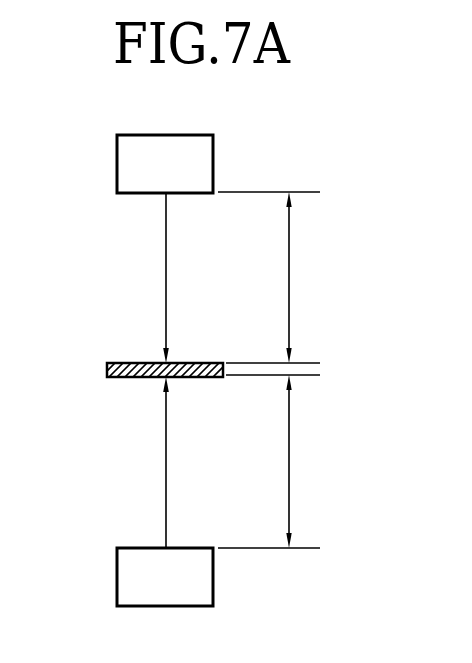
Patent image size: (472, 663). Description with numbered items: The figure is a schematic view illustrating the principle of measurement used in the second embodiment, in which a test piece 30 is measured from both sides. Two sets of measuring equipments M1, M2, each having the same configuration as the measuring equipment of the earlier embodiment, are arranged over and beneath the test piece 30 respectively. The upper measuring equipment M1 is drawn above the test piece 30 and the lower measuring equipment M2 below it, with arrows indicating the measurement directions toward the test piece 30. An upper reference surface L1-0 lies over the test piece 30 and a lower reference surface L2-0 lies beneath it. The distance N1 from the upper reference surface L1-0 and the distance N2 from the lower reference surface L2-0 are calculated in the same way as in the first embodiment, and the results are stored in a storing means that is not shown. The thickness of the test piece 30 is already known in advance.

The test piece 30 is at (105, 365).
The measuring equipment M1 is at (165, 164).
The measuring equipment M2 is at (165, 577).
The distance N1 is at (310, 277).
The distance N2 is at (310, 461).
The upper reference surface L1-0 is at (314, 350).
The lower reference surface L2-0 is at (314, 389).